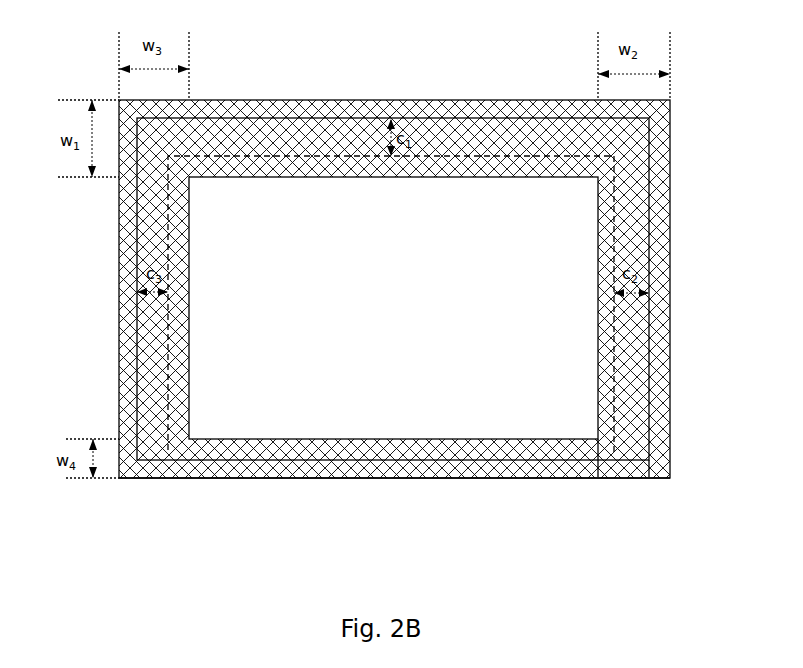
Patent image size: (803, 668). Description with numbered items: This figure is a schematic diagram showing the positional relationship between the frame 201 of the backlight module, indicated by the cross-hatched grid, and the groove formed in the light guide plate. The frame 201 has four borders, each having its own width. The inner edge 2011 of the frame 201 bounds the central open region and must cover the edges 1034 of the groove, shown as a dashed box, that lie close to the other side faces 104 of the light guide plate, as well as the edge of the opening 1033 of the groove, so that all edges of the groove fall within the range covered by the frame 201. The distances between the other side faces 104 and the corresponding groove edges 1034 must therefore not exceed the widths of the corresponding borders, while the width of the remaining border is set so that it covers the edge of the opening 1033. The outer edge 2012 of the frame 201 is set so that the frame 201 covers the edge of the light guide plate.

The other side faces of the light guide plate 104 is at (546, 101).
The edges of the groove 1034 is at (465, 157).
The opening of the groove 1033 is at (460, 466).
The inner edge of the frame 2011 is at (358, 438).
The outer edge of the frame 2012 is at (298, 480).
The frame 201 is at (653, 478).